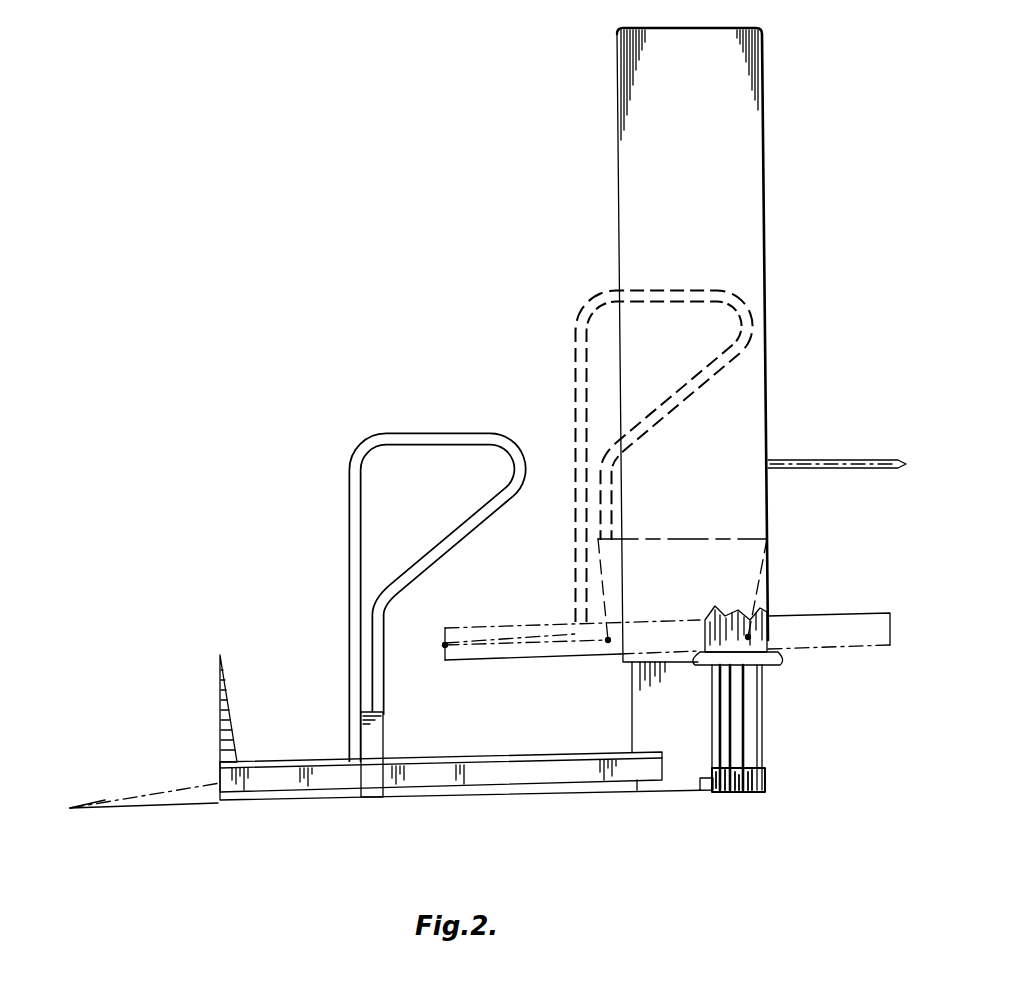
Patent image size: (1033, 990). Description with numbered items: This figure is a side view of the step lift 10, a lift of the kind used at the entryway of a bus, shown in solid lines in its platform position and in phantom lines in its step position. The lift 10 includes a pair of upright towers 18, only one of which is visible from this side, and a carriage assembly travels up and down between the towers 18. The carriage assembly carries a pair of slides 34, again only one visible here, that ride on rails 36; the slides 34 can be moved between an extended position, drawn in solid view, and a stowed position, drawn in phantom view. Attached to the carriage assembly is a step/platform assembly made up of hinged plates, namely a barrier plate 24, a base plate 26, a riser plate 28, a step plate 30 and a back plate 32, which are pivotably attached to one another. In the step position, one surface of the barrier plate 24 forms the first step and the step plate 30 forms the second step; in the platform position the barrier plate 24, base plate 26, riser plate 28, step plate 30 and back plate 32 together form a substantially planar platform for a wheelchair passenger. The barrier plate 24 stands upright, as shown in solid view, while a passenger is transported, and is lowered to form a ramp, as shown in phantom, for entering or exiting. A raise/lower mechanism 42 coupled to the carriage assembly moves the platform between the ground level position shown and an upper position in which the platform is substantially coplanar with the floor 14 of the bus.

The lift 10 is at (492, 360).
The floor 14 is at (815, 458).
The towers 18 is at (747, 142).
The barrier plate 24 is at (498, 638).
The base plate 26 is at (560, 652).
The riser plate 28 is at (625, 597).
The step plate 30 is at (700, 537).
The back plate 32 is at (770, 593).
The slides 34 is at (305, 760).
The rails 36 is at (498, 777).
The raise/lower mechanism 42 is at (780, 747).